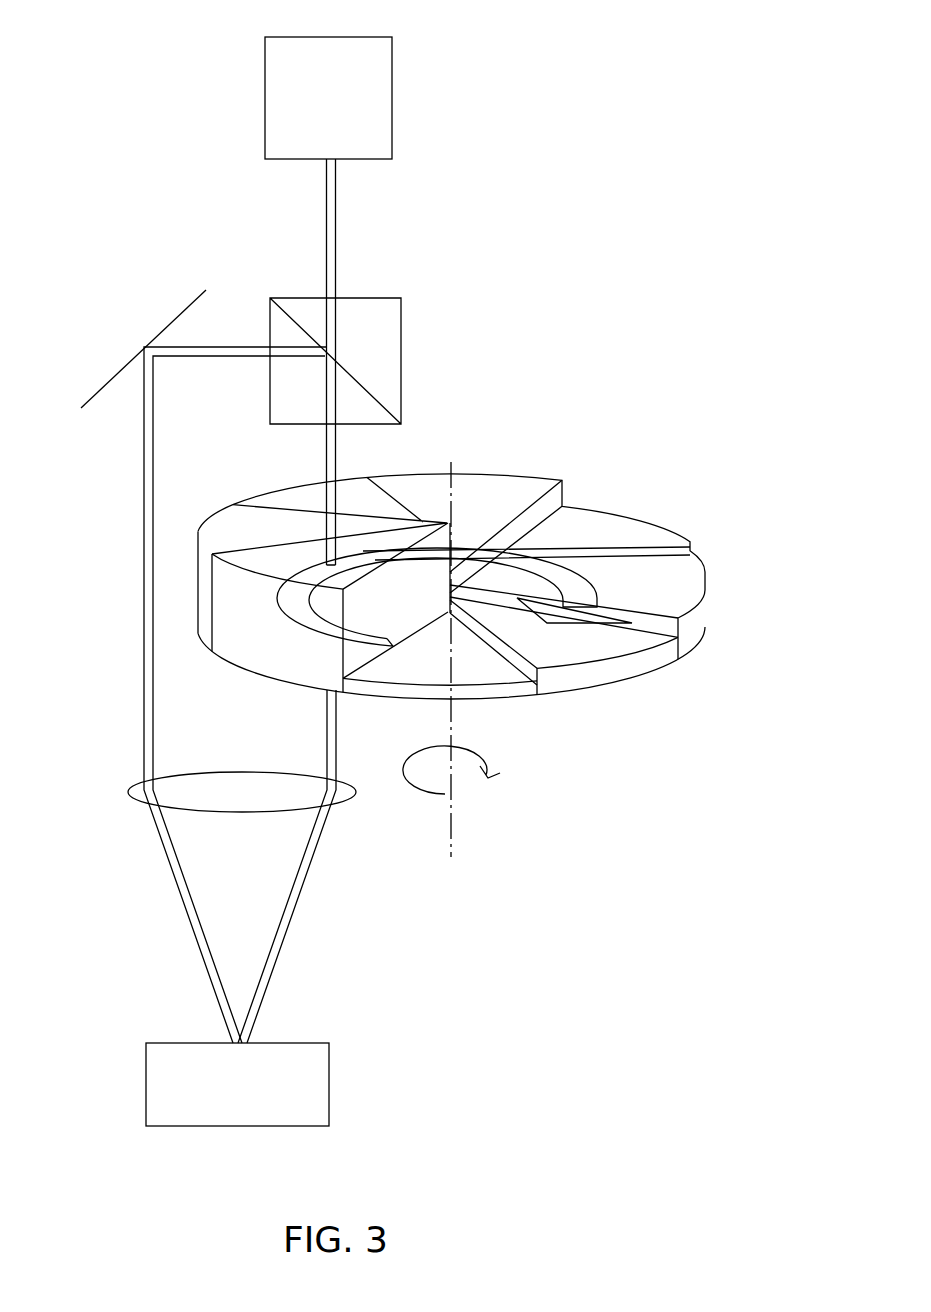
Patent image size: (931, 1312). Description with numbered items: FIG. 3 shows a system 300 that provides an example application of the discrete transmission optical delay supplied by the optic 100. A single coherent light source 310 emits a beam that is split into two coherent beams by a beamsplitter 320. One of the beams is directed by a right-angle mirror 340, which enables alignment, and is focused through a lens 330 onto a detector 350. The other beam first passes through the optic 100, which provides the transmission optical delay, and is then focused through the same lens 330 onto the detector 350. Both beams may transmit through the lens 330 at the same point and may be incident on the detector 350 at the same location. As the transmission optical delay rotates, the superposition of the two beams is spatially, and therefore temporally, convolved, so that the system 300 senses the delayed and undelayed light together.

The system 300 is at (620, 25).
The single coherent light source 310 is at (415, 103).
The beamsplitter 320 is at (421, 349).
The lens 330 is at (348, 816).
The right-angle mirror 340 is at (128, 341).
The detector 350 is at (342, 1090).
The optic 100 is at (722, 623).